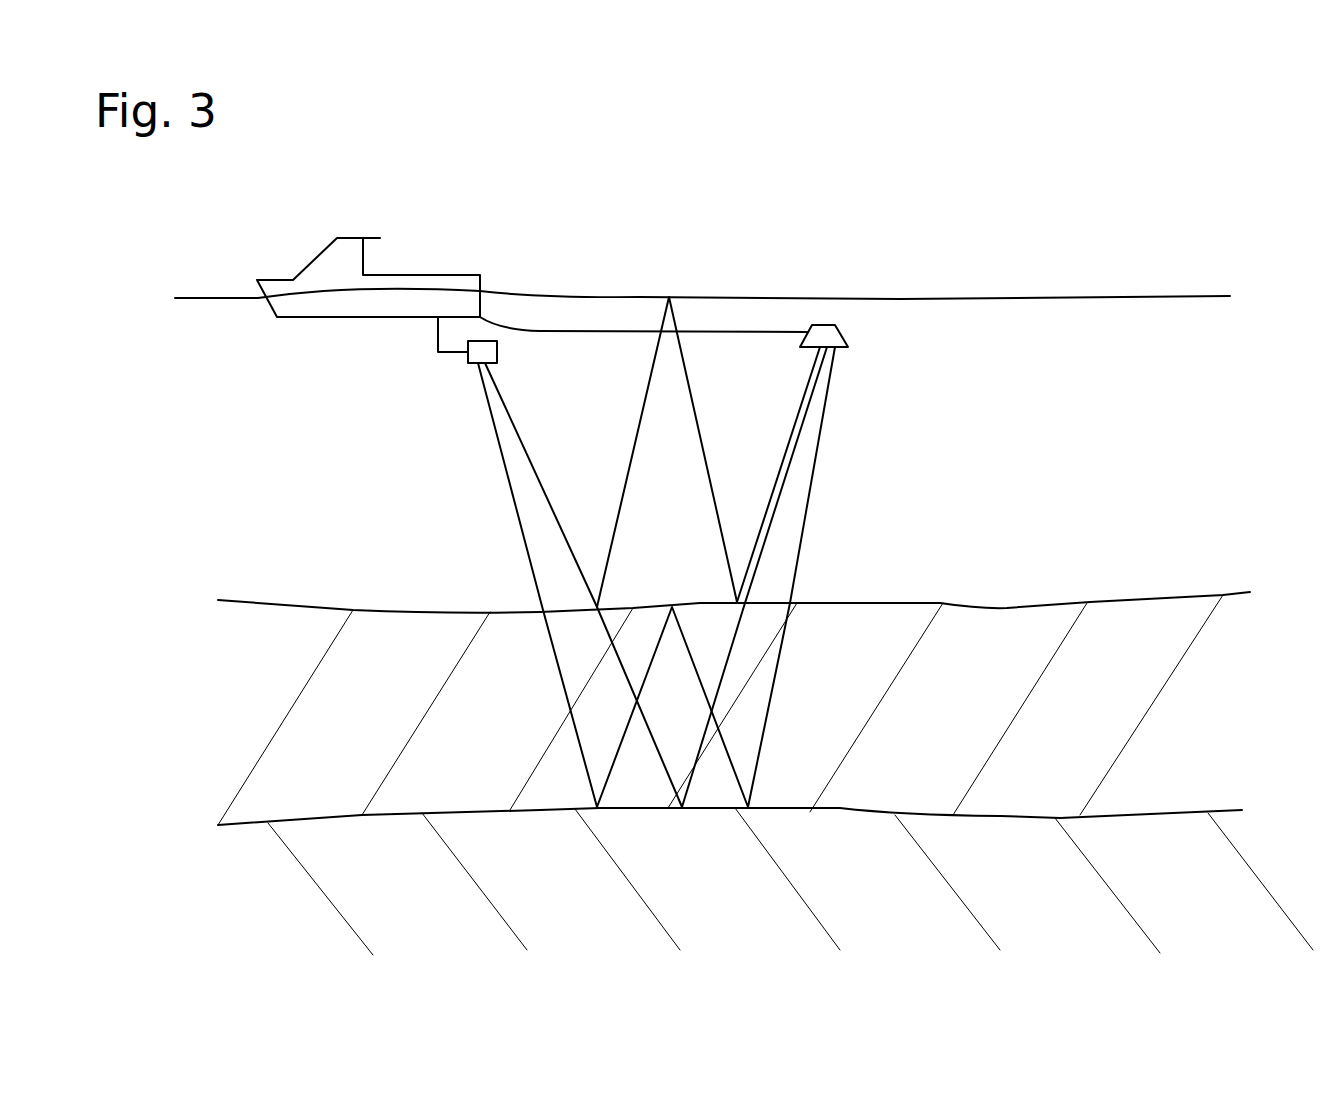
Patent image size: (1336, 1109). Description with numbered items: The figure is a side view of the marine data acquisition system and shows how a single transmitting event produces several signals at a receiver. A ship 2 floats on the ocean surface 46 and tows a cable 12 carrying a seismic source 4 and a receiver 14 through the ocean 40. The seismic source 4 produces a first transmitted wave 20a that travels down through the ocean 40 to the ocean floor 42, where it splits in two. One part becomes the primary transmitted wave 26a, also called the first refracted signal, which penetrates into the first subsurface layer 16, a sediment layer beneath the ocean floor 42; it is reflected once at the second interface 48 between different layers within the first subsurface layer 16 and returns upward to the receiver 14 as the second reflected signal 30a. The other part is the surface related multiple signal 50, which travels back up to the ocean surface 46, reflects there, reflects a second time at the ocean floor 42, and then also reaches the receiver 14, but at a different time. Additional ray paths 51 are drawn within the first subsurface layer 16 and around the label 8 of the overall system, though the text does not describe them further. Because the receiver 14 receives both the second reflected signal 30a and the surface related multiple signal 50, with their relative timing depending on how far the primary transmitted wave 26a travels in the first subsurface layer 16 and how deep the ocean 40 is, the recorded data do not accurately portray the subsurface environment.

The ship 2 is at (315, 258).
The seismic source 4 is at (471, 364).
The marine seismic survey system 8 is at (340, 173).
The cable 12 is at (437, 335).
The receiver 14 is at (840, 330).
The first subsurface layer 16 is at (403, 708).
The first transmitted wave 20a is at (545, 502).
The primary transmitted wave 26a is at (600, 638).
The second reflected signal 30a is at (783, 492).
The ocean 40 is at (237, 453).
The ocean floor 42 is at (280, 603).
The ocean surface 46 is at (530, 292).
The second interface 48 is at (310, 818).
The surface related multiple signal 50 is at (793, 422).
The internal multiple wavefield 51 is at (560, 687).